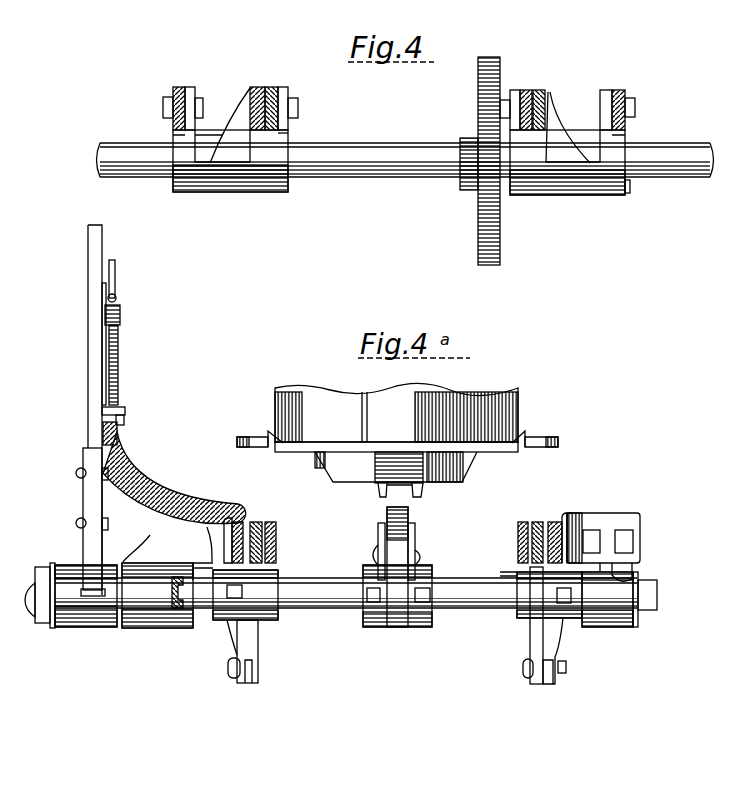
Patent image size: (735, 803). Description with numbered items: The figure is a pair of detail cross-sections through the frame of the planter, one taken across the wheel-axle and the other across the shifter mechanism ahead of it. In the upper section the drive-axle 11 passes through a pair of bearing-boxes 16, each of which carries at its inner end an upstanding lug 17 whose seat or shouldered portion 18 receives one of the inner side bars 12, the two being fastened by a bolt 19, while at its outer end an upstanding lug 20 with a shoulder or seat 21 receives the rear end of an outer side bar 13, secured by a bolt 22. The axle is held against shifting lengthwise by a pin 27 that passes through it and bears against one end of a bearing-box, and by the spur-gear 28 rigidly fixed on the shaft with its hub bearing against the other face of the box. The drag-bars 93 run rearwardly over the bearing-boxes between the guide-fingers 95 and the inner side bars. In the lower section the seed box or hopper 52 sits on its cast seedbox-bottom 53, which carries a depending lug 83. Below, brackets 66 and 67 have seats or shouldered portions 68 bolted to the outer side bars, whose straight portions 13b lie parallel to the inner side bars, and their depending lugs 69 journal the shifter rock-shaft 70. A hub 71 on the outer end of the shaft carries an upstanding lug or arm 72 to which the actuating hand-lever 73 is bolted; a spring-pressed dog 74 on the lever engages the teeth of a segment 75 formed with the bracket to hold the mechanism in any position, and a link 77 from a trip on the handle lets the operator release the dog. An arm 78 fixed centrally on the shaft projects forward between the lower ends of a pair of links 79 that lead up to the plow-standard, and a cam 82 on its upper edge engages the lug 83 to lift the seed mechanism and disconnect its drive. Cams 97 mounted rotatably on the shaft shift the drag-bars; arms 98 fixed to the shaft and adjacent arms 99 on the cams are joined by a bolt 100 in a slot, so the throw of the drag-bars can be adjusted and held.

In FIG. 4, the drive-axle 11 is at (373, 157).
In FIG. 4, the inner side bars 12 is at (270, 87).
In FIG. 4A, the inner side bars 12 is at (277, 542).
In FIG. 4, the outer side bars 13 is at (182, 87).
In FIG. 4A, the straight portions 13b is at (244, 522).
In FIG. 4, the bearing-boxes 16 is at (248, 184).
In FIG. 4, the upstanding lugs 17 is at (289, 91).
In FIG. 4, the seats or shouldered portions 18 is at (278, 135).
In FIG. 4, the bolts 19 is at (299, 108).
In FIG. 4, the upstanding lugs 20 is at (196, 91).
In FIG. 4, the shoulders or seats 21 is at (176, 134).
In FIG. 4, the bolts 22 is at (163, 107).
In FIG. 4, the pin 27 is at (628, 189).
In FIG. 4, the spur-gear 28 is at (500, 237).
In FIG. 4A, the seed box or hopper 52 is at (519, 411).
In FIG. 4A, the seedbox-bottom 53 is at (526, 445).
In FIG. 4A, the bracket 66 is at (175, 572).
In FIG. 4A, the bracket 67 is at (608, 530).
In FIG. 4A, the seats or shouldered portions 68 is at (229, 518).
In FIG. 4A, the depending lugs 69 is at (171, 618).
In FIG. 4A, the shifter rock-shaft 70 is at (333, 597).
In FIG. 4A, the hub 71 is at (100, 618).
In FIG. 4A, the upstanding lug or arm 72 is at (83, 496).
In FIG. 4A, the actuating hand-lever 73 is at (88, 355).
In FIG. 4A, the spring-pressed dog 74 is at (118, 407).
In FIG. 4A, the segment 75 is at (120, 446).
In FIG. 4A, the link 77 is at (116, 276).
In FIG. 4A, the arm 78 is at (399, 560).
In FIG. 4A, the links 79 is at (417, 545).
In FIG. 4A, the cam 82 is at (408, 513).
In FIG. 4A, the depending lug 83 is at (380, 486).
In FIG. 4, the drag-bars 93 is at (270, 87).
In FIG. 4A, the drag-bars 93 is at (263, 522).
In FIG. 4, the guide-fingers 95 is at (237, 117).
In FIG. 4A, the cams 97 is at (255, 576).
In FIG. 4A, the arms 98 is at (238, 630).
In FIG. 4A, the arms 99 is at (258, 639).
In FIG. 4A, the bolt 100 is at (262, 668).